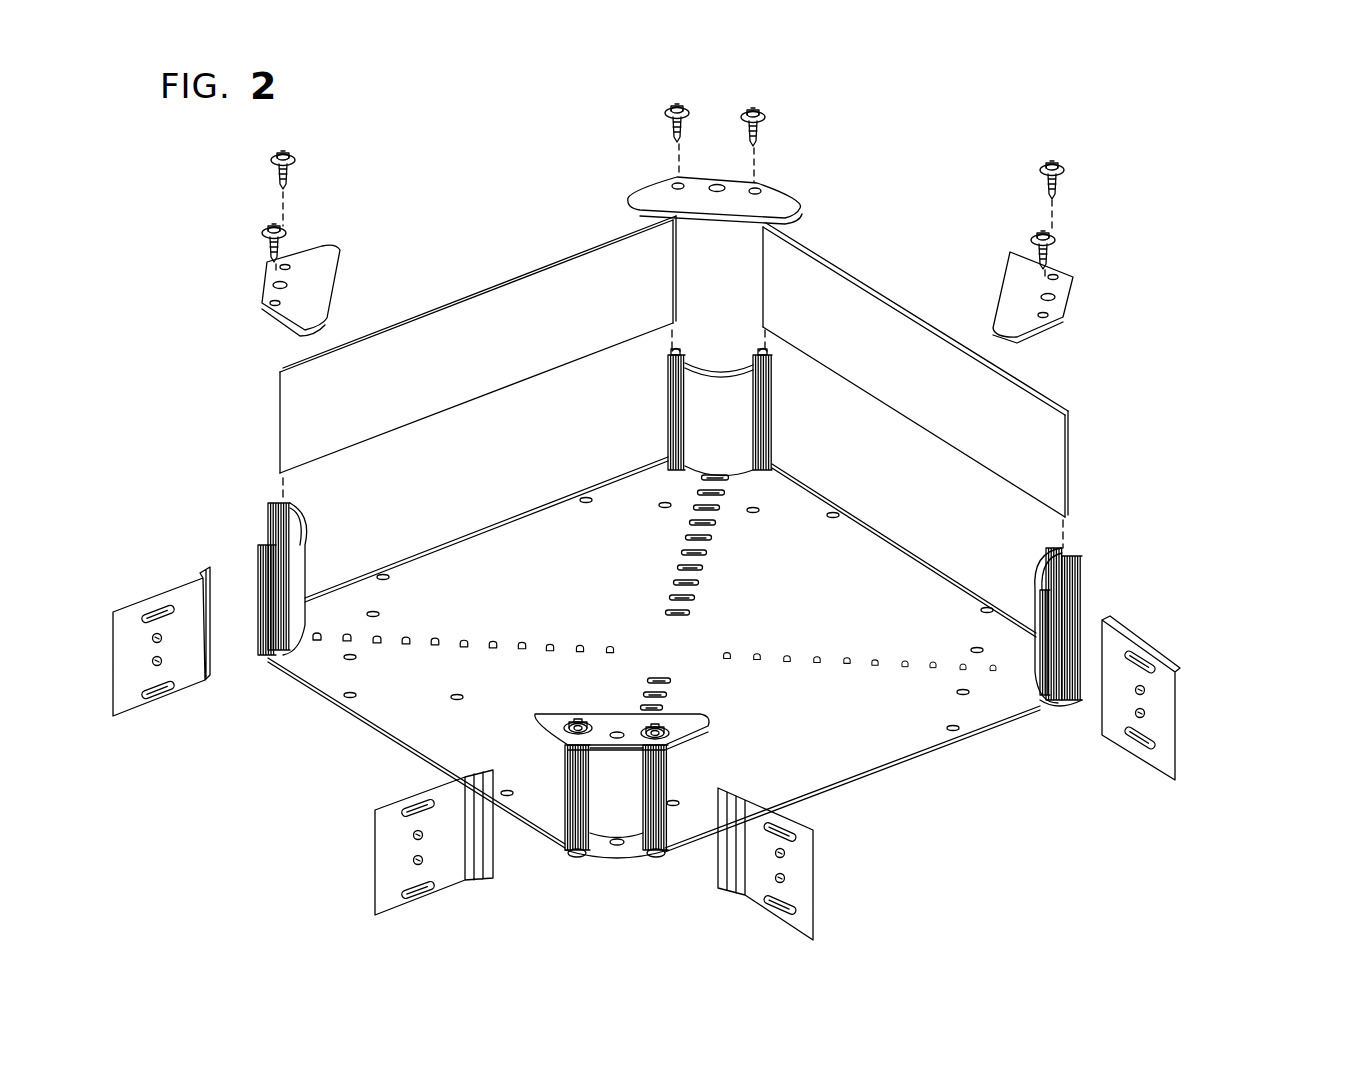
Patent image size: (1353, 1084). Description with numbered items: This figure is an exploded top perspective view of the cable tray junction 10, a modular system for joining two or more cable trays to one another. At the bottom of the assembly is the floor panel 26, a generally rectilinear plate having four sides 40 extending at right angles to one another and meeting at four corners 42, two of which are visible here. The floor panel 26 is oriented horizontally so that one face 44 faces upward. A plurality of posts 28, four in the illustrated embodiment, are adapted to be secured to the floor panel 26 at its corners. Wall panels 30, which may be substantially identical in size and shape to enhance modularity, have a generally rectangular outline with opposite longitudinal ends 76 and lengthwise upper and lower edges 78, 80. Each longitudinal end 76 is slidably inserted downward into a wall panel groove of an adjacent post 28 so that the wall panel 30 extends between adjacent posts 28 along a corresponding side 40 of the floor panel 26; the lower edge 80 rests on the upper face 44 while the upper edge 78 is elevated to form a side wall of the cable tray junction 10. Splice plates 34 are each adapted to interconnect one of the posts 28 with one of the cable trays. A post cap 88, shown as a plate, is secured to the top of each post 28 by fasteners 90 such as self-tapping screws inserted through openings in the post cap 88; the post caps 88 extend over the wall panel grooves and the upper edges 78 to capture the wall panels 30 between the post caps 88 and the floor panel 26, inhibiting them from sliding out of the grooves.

The cable tray junction 10 is at (940, 150).
The floor panel 26 is at (988, 730).
The post 28 is at (304, 550).
The wall panel 30 is at (577, 255).
The splice plate 34 is at (163, 718).
The side 40 is at (458, 536).
The corner 42 is at (1088, 668).
The face 44 is at (598, 595).
The longitudinal end 76 is at (280, 420).
The upper edge 78 is at (420, 316).
The lower edge 80 is at (480, 396).
The post cap 88 is at (258, 291).
The fastener 90 is at (263, 234).